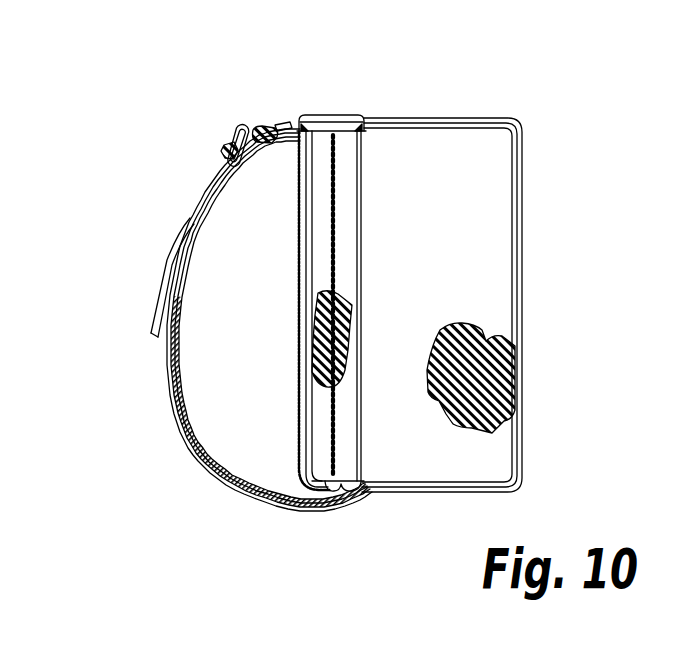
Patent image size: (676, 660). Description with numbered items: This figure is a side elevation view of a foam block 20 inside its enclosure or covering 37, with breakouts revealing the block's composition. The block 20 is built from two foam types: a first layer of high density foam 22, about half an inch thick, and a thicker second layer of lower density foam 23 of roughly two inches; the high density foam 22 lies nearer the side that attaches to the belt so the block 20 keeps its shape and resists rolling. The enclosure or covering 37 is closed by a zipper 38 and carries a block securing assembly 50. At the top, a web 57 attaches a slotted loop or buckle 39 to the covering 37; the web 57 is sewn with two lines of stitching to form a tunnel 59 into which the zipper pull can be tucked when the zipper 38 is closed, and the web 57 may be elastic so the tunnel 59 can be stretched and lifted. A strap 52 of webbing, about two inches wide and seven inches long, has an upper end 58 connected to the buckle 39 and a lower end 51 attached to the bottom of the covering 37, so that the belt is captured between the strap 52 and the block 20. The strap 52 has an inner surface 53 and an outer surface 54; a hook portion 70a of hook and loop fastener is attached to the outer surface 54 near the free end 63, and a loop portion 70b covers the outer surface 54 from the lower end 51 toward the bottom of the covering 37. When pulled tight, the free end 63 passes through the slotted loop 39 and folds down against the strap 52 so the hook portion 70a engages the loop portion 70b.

The foam block 20 is at (523, 63).
The high density foam 22 is at (312, 330).
The lower density foam 23 is at (513, 358).
The enclosure or covering 37 is at (519, 131).
The zipper 38 is at (437, 305).
The slotted loop or buckle 39 is at (225, 151).
The block securing assembly 50 is at (110, 205).
The lower end of strap 51 is at (365, 494).
The strap 52 is at (168, 258).
The inner surface of strap 53 is at (222, 462).
The outer surface of strap 54 is at (195, 462).
The web 57 is at (312, 117).
The upper end of strap 58 is at (240, 133).
The tunnel 59 is at (341, 117).
The free end of strap 63 is at (153, 322).
The hook portion 70a is at (298, 264).
The loop portion 70b is at (207, 476).